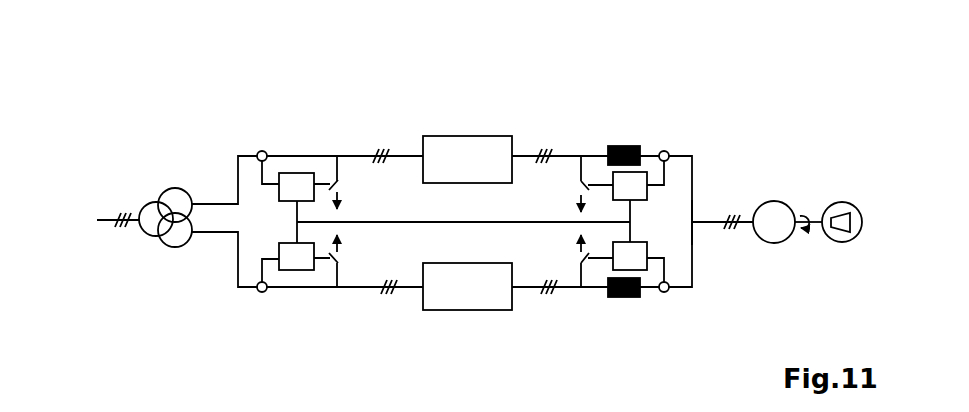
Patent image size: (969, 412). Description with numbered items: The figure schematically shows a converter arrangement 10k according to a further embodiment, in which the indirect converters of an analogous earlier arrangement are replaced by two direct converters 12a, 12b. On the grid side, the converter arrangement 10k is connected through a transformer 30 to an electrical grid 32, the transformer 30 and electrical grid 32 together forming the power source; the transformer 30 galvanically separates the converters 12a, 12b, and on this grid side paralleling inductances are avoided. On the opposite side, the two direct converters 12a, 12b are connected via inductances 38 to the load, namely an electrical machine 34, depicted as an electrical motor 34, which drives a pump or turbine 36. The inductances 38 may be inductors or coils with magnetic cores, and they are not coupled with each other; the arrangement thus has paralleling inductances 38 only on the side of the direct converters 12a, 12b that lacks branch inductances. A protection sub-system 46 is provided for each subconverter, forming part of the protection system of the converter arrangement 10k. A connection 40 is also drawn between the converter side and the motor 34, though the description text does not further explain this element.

The converter arrangement 10k is at (732, 76).
The transformer 30 is at (160, 190).
The electrical grid 32 is at (122, 224).
The protection system 46 is at (290, 173).
The direct converter 12a is at (468, 136).
The direct converter 12b is at (453, 310).
The inductance 38 is at (618, 146).
The output connection line 40 is at (692, 223).
The electrical machine 34 is at (778, 243).
The pump or turbine 36 is at (843, 243).